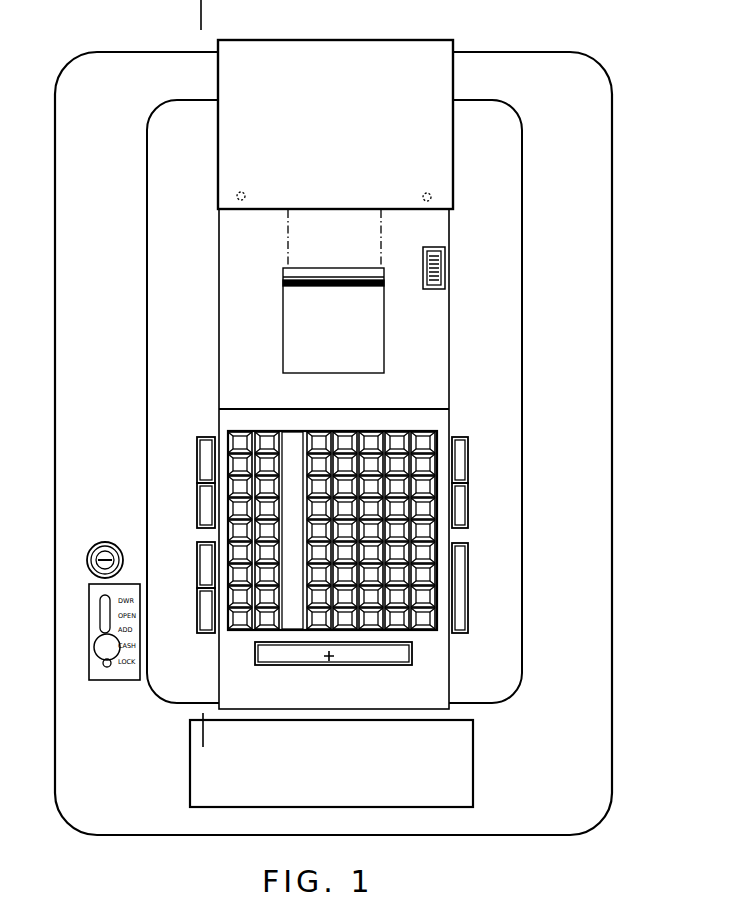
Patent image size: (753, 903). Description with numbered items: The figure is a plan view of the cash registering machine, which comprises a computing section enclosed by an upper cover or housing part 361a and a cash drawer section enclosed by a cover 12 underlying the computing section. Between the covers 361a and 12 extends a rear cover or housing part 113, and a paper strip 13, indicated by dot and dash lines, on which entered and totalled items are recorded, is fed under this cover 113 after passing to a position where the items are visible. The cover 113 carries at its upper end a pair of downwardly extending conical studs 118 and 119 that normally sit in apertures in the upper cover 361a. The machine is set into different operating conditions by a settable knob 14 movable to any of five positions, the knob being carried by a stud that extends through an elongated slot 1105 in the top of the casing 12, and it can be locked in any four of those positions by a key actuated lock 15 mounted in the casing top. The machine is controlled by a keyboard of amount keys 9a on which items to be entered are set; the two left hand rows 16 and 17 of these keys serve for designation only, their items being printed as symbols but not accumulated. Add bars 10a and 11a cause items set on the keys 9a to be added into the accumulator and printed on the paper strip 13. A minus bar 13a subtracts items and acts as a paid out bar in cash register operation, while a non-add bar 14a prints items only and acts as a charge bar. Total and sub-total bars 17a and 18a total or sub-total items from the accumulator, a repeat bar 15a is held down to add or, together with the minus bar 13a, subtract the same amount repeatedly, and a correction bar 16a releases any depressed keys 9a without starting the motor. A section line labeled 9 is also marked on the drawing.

The section line 9- 9 is at (208, 16).
The cover 12 is at (606, 659).
The paper strip 13 is at (288, 250).
The cover or housing part 113 is at (310, 33).
The conical stud 118 is at (245, 194).
The conical stud 119 is at (434, 190).
The cover or housing part 361a is at (508, 363).
The left hand row of amount keys 16 is at (241, 430).
The left hand row of amount keys 17 is at (272, 430).
The amount keys 9a is at (419, 430).
The total bar 17a is at (200, 468).
The sub-total bar 18a is at (203, 506).
The non-add bar 14a is at (200, 570).
The minus bar 13a is at (207, 633).
The correction bar 16a is at (486, 473).
The repeat bar 15a is at (468, 514).
The add bar 11a is at (468, 634).
The add bar 10a is at (379, 666).
The key actuated lock 15 is at (121, 535).
The elongated slot 1105 is at (103, 614).
The settable knob 14 is at (100, 650).